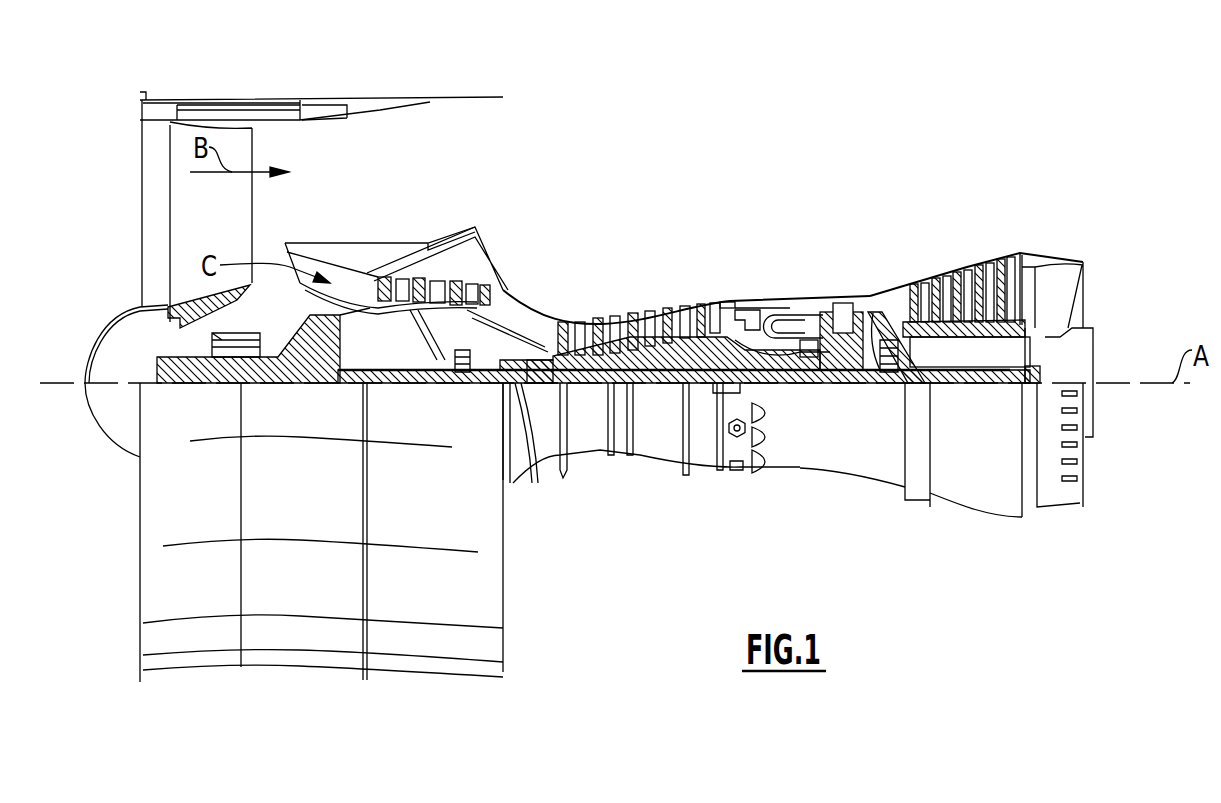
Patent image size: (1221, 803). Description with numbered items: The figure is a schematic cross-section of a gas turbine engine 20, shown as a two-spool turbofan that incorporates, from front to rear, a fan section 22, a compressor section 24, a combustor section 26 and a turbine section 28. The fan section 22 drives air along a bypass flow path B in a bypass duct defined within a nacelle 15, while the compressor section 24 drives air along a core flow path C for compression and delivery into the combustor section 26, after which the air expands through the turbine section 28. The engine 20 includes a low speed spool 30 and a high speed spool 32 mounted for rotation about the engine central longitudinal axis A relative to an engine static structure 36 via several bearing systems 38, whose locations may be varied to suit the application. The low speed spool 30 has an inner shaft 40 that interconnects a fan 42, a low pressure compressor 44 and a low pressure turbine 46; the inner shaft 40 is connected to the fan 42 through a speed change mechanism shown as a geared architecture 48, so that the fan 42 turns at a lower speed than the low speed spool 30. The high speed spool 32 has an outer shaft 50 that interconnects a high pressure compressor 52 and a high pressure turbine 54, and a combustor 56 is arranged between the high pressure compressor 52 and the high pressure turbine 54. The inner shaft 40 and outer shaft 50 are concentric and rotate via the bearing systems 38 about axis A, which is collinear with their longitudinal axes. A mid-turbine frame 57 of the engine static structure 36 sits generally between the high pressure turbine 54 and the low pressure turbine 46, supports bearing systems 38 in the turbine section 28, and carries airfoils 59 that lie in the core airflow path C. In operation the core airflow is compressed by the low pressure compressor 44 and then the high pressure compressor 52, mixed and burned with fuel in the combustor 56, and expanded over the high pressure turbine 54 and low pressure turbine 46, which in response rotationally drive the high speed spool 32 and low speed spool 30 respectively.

The nacelle 15 is at (313, 100).
The gas turbine engine 20 is at (786, 146).
The fan section 22 is at (250, 84).
The compressor section 24 is at (557, 284).
The combustor section 26 is at (775, 272).
The turbine section 28 is at (928, 235).
The low speed spool 30 is at (655, 400).
The high speed spool 32 is at (698, 347).
The engine static structure 36 is at (702, 484).
The bearing systems 38 is at (462, 367).
The inner shaft 40 is at (523, 390).
The fan 42 is at (231, 229).
The low pressure compressor 44 is at (413, 297).
The low pressure turbine 46 is at (963, 263).
The geared architecture 48 is at (323, 367).
The outer shaft 50 is at (786, 388).
The high pressure compressor 52 is at (637, 352).
The high pressure turbine 54 is at (842, 303).
The combustor 56 is at (780, 327).
The mid-turbine frame 57 is at (888, 281).
The airfoils 59 is at (907, 340).